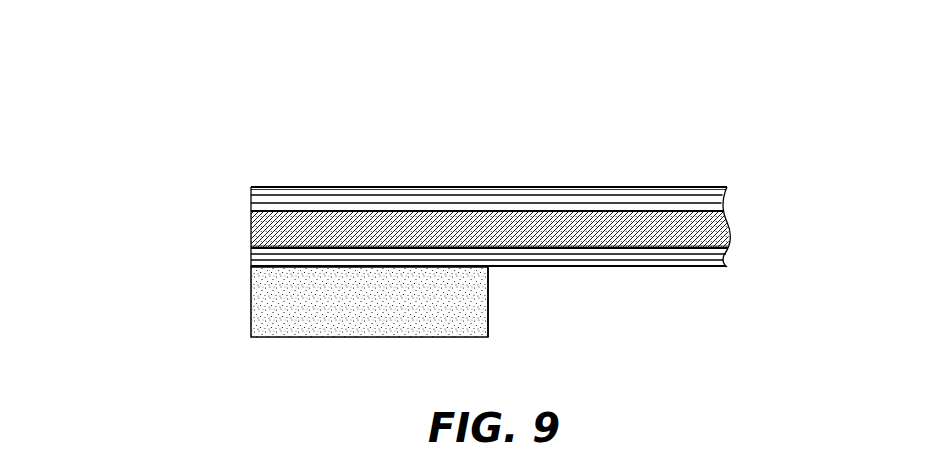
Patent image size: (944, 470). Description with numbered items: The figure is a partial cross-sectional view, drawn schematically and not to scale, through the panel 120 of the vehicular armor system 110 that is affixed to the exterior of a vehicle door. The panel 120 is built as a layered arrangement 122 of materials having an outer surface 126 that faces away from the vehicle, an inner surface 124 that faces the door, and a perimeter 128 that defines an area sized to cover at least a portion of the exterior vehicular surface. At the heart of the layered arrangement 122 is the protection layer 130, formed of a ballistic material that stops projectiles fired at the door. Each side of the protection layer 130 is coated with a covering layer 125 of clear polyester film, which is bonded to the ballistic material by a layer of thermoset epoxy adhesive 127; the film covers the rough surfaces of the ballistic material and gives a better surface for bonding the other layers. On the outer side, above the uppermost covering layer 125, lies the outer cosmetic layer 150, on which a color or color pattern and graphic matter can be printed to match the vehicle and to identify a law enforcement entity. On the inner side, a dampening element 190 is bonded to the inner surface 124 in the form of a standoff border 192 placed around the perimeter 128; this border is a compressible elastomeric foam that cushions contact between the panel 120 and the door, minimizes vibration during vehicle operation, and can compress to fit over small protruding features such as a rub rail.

The vehicular armor system 110 is at (318, 80).
The panel 120 is at (410, 230).
The layered arrangement 122 is at (223, 188).
The inner surface 124 is at (677, 266).
The covering layer 125 is at (727, 200).
The outer surface 126 is at (610, 188).
The layer of thermoset epoxy adhesive 127 is at (728, 207).
The perimeter 128 is at (251, 242).
The protection layer 130 is at (730, 240).
The outer cosmetic layer 150 is at (727, 192).
The dampening element 190 is at (262, 338).
The standoff border 192 is at (488, 316).